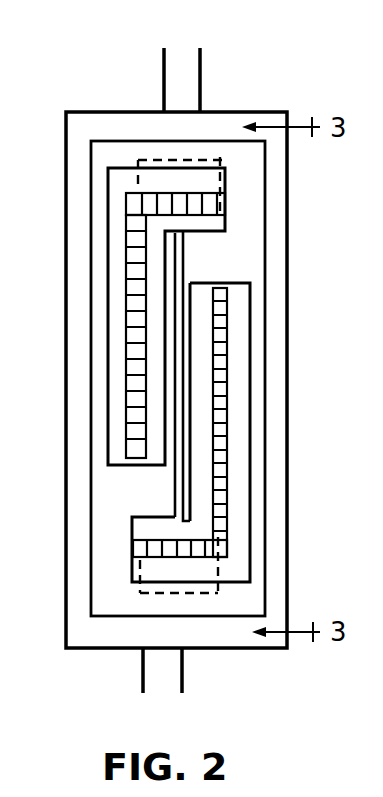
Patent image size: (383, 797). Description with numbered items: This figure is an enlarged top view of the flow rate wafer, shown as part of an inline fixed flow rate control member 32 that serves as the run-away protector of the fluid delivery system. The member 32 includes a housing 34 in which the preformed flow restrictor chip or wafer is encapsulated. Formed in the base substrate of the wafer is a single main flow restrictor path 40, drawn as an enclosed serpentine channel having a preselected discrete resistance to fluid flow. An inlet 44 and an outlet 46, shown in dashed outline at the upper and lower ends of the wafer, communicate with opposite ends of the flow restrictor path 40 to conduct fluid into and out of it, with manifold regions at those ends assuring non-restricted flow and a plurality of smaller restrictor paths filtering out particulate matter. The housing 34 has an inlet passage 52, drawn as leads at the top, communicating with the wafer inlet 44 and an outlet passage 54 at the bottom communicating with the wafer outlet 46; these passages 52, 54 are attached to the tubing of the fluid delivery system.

The inline fixed flow rate control member 32 is at (301, 95).
The housing 34 is at (83, 120).
The main flow restrictor path 40 is at (186, 257).
The inlet 44 is at (212, 182).
The outlet 46 is at (212, 570).
The inlet passage 52 is at (178, 58).
The outlet passage 54 is at (152, 668).